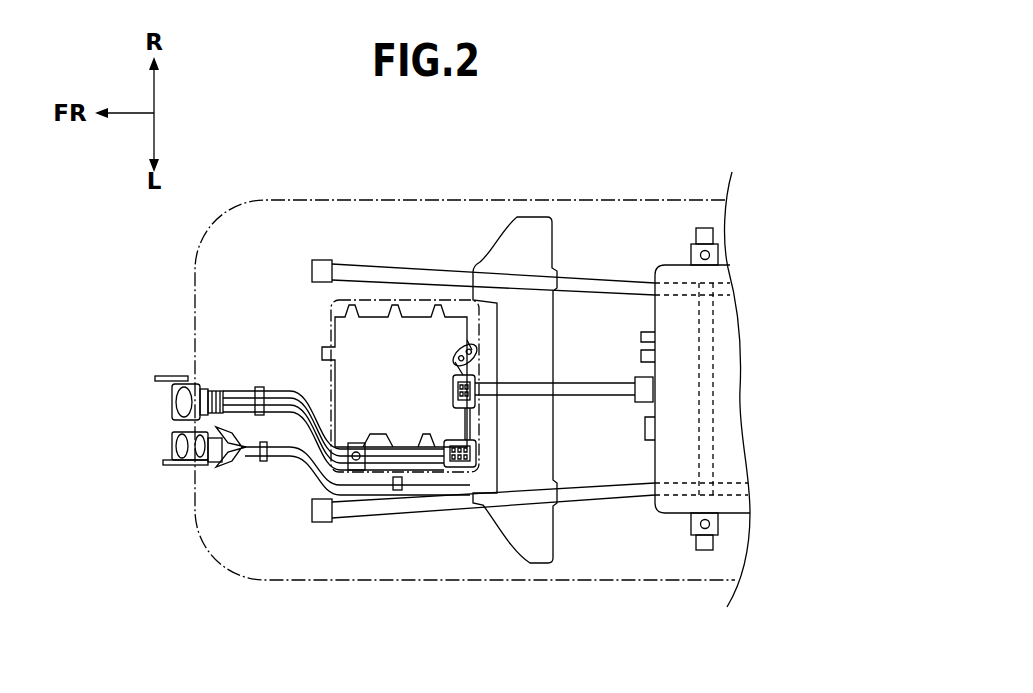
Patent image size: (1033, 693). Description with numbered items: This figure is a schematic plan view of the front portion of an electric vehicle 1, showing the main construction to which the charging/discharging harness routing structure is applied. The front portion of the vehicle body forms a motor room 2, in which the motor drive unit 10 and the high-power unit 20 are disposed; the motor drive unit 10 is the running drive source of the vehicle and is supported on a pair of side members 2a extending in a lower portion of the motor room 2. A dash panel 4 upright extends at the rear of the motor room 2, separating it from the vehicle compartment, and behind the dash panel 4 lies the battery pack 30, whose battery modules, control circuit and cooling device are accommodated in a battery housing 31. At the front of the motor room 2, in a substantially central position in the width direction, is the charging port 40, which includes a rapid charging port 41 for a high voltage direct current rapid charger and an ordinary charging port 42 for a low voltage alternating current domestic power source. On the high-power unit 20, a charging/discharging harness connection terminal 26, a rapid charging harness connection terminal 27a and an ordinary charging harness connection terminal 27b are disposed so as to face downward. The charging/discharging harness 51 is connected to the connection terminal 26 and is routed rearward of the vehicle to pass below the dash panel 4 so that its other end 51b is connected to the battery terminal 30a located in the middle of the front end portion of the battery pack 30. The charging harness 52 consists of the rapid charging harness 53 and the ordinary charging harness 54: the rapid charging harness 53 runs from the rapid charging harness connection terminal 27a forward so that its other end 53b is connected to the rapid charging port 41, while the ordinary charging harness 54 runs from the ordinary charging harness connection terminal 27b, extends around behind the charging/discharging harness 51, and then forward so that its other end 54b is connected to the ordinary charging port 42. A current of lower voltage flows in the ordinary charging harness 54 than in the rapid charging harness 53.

The electric vehicle 1 is at (333, 187).
The motor room 2 is at (278, 366).
The side member 2a is at (389, 262).
The dash panel 4 is at (483, 507).
The motor drive unit 10 is at (362, 343).
The high-power unit 20 is at (418, 294).
The charging/discharging harness connection terminal 26 is at (476, 403).
The rapid charging harness connection terminal 27a is at (478, 447).
The ordinary charging harness connection terminal 27b is at (467, 348).
The battery pack 30 is at (716, 378).
The battery terminal 30a is at (651, 401).
The battery housing 31 is at (677, 262).
The charging port 40 is at (100, 380).
The rapid charging port 41 is at (176, 400).
The ordinary charging port 42 is at (174, 448).
The charging/discharging harness 51 is at (601, 382).
The other end of charging/discharging harness 51b is at (640, 378).
The charging harness 52 is at (305, 620).
The rapid charging harness 53 is at (343, 472).
The other end of rapid charging harness 53b is at (228, 389).
The ordinary charging harness 54 is at (308, 472).
The other end of ordinary charging harness 54b is at (236, 468).